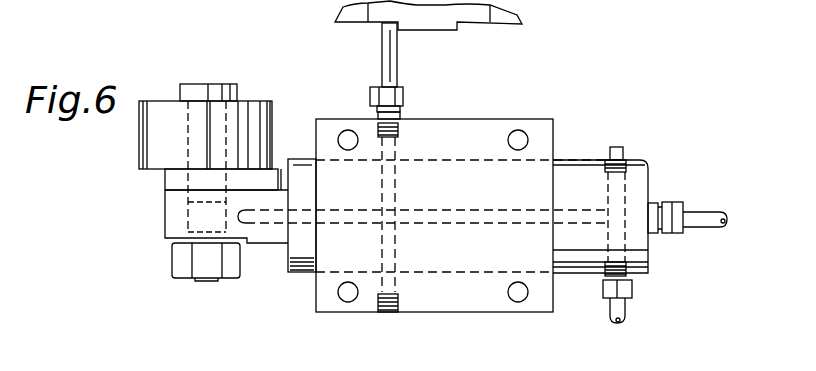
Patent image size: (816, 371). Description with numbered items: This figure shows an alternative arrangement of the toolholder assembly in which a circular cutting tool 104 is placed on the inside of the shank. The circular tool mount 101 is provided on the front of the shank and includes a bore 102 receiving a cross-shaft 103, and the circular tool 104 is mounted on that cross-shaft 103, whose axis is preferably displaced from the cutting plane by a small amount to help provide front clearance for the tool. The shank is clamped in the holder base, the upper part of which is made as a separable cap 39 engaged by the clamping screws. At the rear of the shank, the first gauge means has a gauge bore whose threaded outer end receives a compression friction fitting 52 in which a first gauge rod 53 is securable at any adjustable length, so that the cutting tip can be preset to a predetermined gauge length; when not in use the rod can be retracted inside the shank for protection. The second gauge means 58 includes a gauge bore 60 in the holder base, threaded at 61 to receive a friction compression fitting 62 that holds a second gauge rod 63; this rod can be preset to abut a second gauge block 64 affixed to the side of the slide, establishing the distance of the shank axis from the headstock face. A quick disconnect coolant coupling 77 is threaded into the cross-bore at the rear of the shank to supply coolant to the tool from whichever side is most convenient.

The cap 39 is at (553, 140).
The compression friction fitting 52 is at (712, 228).
The first gauge rod 53 is at (680, 203).
The second gauge means 58 is at (382, 70).
The gauge bore 60 is at (396, 172).
The threaded end 61 is at (400, 128).
The friction compression fitting 62 is at (403, 97).
The second gauge rod 63 is at (382, 50).
The second gauge block 64 is at (399, 27).
The quick disconnect coolant coupling 77 is at (632, 290).
The circular tool mount 101 is at (165, 222).
The bore 102 is at (222, 208).
The cross-shaft 103 is at (228, 140).
The circular tool 104 is at (272, 100).